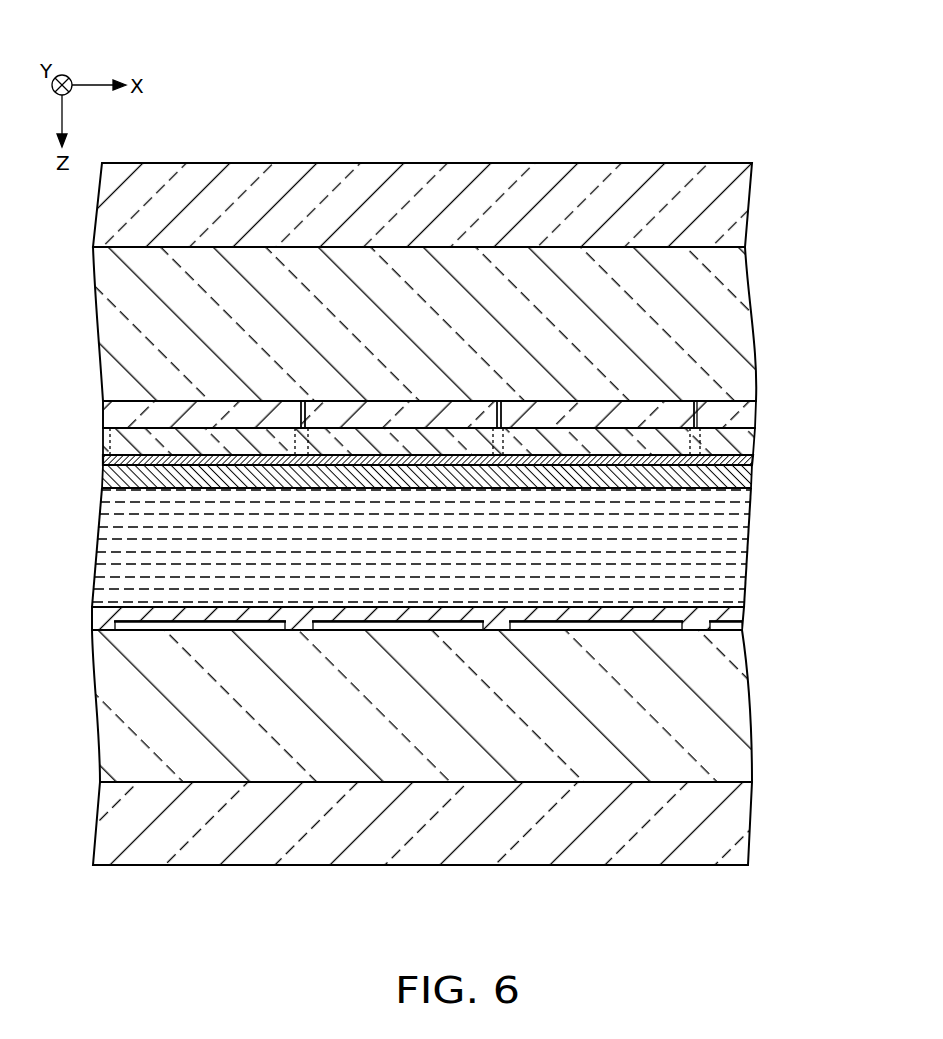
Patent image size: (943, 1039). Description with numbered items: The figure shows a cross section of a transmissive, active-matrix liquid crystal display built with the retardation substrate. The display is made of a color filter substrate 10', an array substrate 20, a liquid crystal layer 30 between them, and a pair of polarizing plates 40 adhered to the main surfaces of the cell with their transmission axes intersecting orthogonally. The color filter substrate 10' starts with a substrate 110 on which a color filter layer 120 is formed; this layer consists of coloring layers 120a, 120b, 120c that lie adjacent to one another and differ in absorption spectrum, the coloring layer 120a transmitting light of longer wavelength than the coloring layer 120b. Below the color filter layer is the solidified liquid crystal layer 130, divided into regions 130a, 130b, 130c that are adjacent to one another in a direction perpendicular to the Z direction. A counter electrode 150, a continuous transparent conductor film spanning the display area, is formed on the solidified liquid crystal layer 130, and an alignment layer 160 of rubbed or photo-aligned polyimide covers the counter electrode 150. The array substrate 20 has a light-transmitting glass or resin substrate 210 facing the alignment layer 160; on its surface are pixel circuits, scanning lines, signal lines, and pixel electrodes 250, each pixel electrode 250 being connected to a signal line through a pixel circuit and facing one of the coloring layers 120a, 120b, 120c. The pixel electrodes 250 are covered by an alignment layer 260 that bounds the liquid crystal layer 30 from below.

The color filter substrate 10' is at (435, 317).
The array substrate 20 is at (420, 759).
The liquid crystal layer 30 is at (94, 548).
The polarizing plates 40 is at (722, 172).
The substrate 110 is at (742, 300).
The color filter layer 120 is at (468, 275).
The coloring layer 120a is at (542, 406).
The coloring layer 120b is at (342, 406).
The coloring layer 120c is at (143, 406).
The solidified liquid crystal layer 130 is at (468, 288).
The region 130a is at (632, 445).
The region 130b is at (432, 445).
The region 130c is at (232, 445).
The counter electrode 150 is at (754, 461).
The alignment layer 160 is at (757, 480).
The substrate 210 is at (743, 714).
The pixel electrodes 250 is at (243, 632).
The alignment layer 260 is at (693, 633).